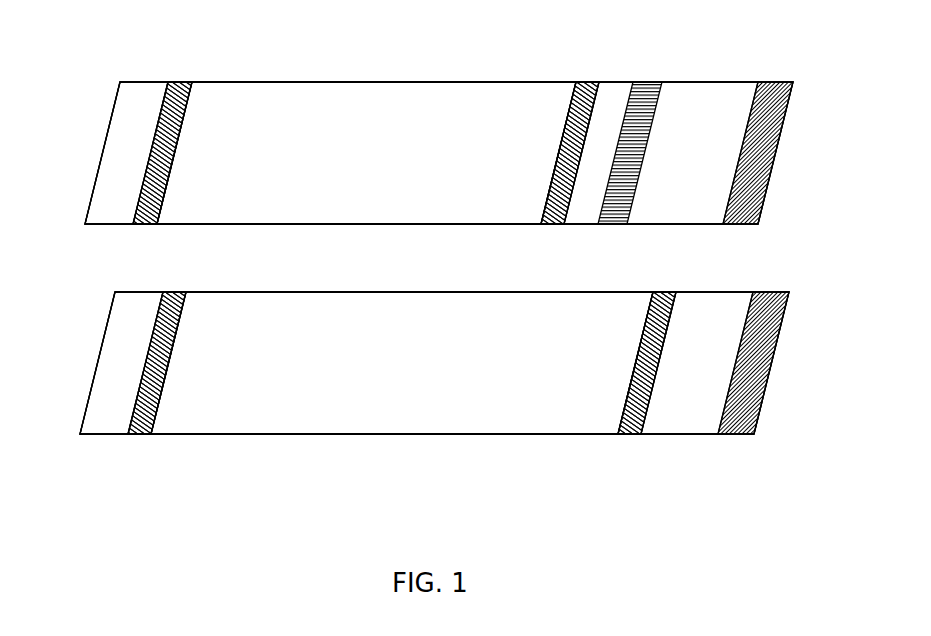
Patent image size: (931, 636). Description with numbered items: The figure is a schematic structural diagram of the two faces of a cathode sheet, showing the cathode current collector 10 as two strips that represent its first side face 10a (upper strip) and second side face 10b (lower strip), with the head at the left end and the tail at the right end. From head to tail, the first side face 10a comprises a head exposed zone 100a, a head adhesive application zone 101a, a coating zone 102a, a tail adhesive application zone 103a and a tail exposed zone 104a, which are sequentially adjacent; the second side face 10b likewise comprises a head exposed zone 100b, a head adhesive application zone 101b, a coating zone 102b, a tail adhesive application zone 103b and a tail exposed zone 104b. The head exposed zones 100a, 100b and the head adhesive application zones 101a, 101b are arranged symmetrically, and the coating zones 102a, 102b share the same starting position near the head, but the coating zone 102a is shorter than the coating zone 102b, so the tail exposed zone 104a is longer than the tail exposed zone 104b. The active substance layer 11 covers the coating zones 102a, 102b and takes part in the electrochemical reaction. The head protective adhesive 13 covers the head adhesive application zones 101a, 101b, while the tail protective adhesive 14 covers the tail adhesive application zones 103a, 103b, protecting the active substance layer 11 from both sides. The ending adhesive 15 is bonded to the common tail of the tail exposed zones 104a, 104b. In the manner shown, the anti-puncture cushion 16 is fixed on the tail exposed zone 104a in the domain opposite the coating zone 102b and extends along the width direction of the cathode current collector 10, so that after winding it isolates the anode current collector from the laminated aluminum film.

The cathode current collector 10 is at (107, 322).
The first side face 10a is at (771, 70).
The second side face 10b is at (733, 440).
The active substance layer 11 is at (386, 215).
The head protective adhesive 13 is at (178, 297).
The tail protective adhesive 14 is at (662, 298).
The ending adhesive 15 is at (770, 296).
The anti-puncture cushion 16 is at (617, 224).
The head exposed zone 100a is at (125, 82).
The head adhesive application zone 101a is at (185, 82).
The coating zone 102a is at (378, 82).
The tail adhesive application zone 103a is at (590, 82).
The tail exposed zone 104a is at (718, 82).
The head exposed zone 100b is at (88, 437).
The head adhesive application zone 101b is at (148, 437).
The coating zone 102b is at (351, 437).
The tail adhesive application zone 103b is at (630, 437).
The tail exposed zone 104b is at (703, 437).